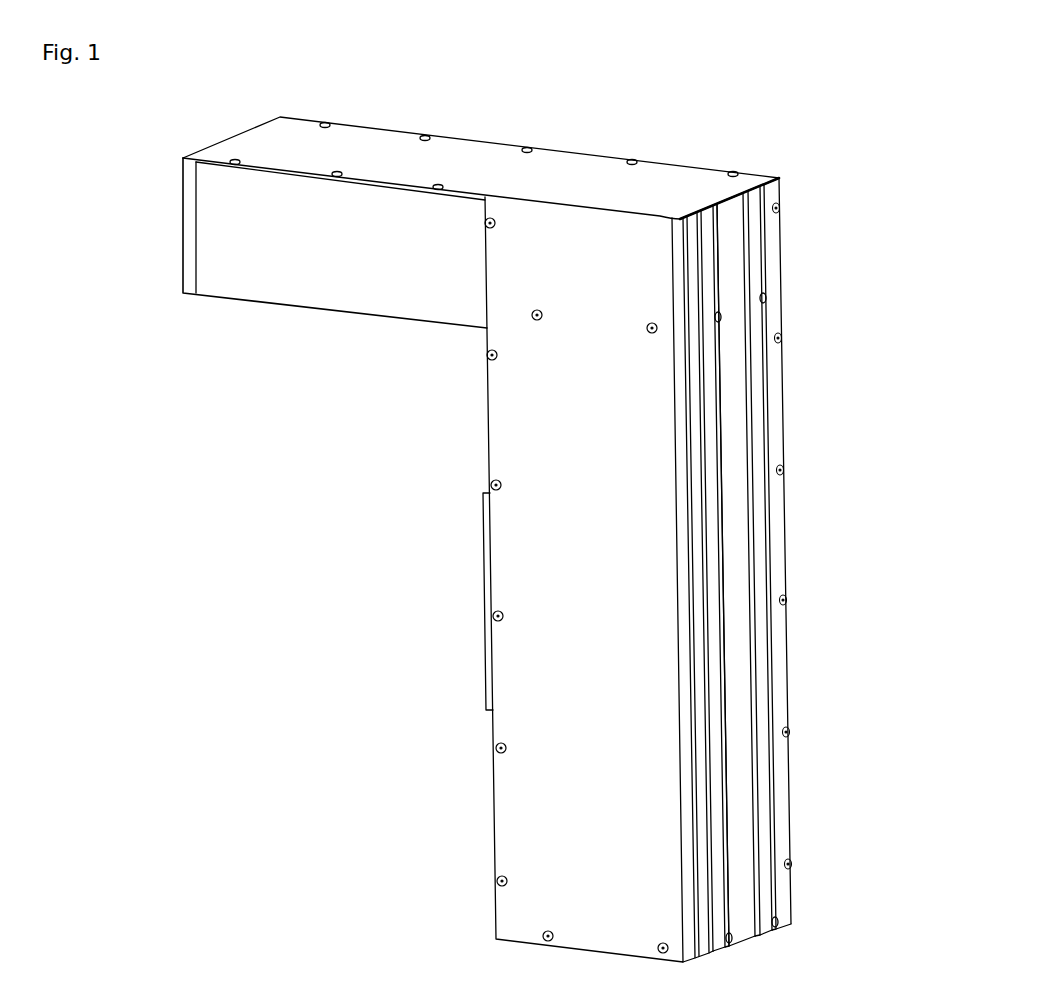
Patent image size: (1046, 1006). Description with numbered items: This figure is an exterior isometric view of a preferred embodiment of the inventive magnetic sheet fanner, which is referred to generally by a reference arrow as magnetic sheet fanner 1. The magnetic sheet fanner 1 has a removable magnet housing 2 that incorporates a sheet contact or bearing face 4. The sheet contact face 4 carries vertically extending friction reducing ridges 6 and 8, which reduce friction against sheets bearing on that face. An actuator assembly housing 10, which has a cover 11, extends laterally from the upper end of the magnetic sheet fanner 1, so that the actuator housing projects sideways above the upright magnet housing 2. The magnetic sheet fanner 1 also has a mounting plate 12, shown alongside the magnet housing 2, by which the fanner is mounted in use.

The magnetic sheet fanner 1 is at (311, 602).
The removable magnet housing 2 is at (548, 785).
The sheet contact face 4 is at (733, 382).
The friction reducing ridge 6 is at (755, 512).
The friction reducing ridge 8 is at (715, 686).
The actuator assembly housing 10 is at (337, 273).
The cover 11 is at (558, 170).
The mounting plate 12 is at (485, 610).